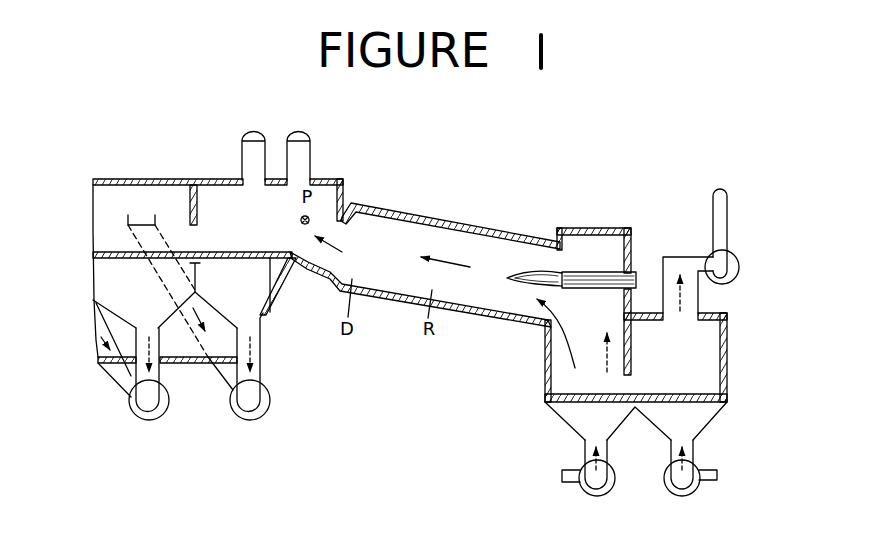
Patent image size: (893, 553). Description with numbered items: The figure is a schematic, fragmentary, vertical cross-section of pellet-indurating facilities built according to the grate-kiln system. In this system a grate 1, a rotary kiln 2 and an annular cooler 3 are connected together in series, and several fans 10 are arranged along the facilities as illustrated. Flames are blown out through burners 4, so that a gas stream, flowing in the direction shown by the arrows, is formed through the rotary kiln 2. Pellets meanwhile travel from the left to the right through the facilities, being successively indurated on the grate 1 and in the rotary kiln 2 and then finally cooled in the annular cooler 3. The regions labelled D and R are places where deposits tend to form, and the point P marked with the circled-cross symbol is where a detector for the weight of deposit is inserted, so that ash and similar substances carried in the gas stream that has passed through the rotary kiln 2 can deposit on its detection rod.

The grate 1 is at (168, 179).
The rotary kiln 2 is at (448, 221).
The annular cooler 3 is at (547, 352).
The burners 4 is at (638, 277).
The fans 10 is at (151, 421).